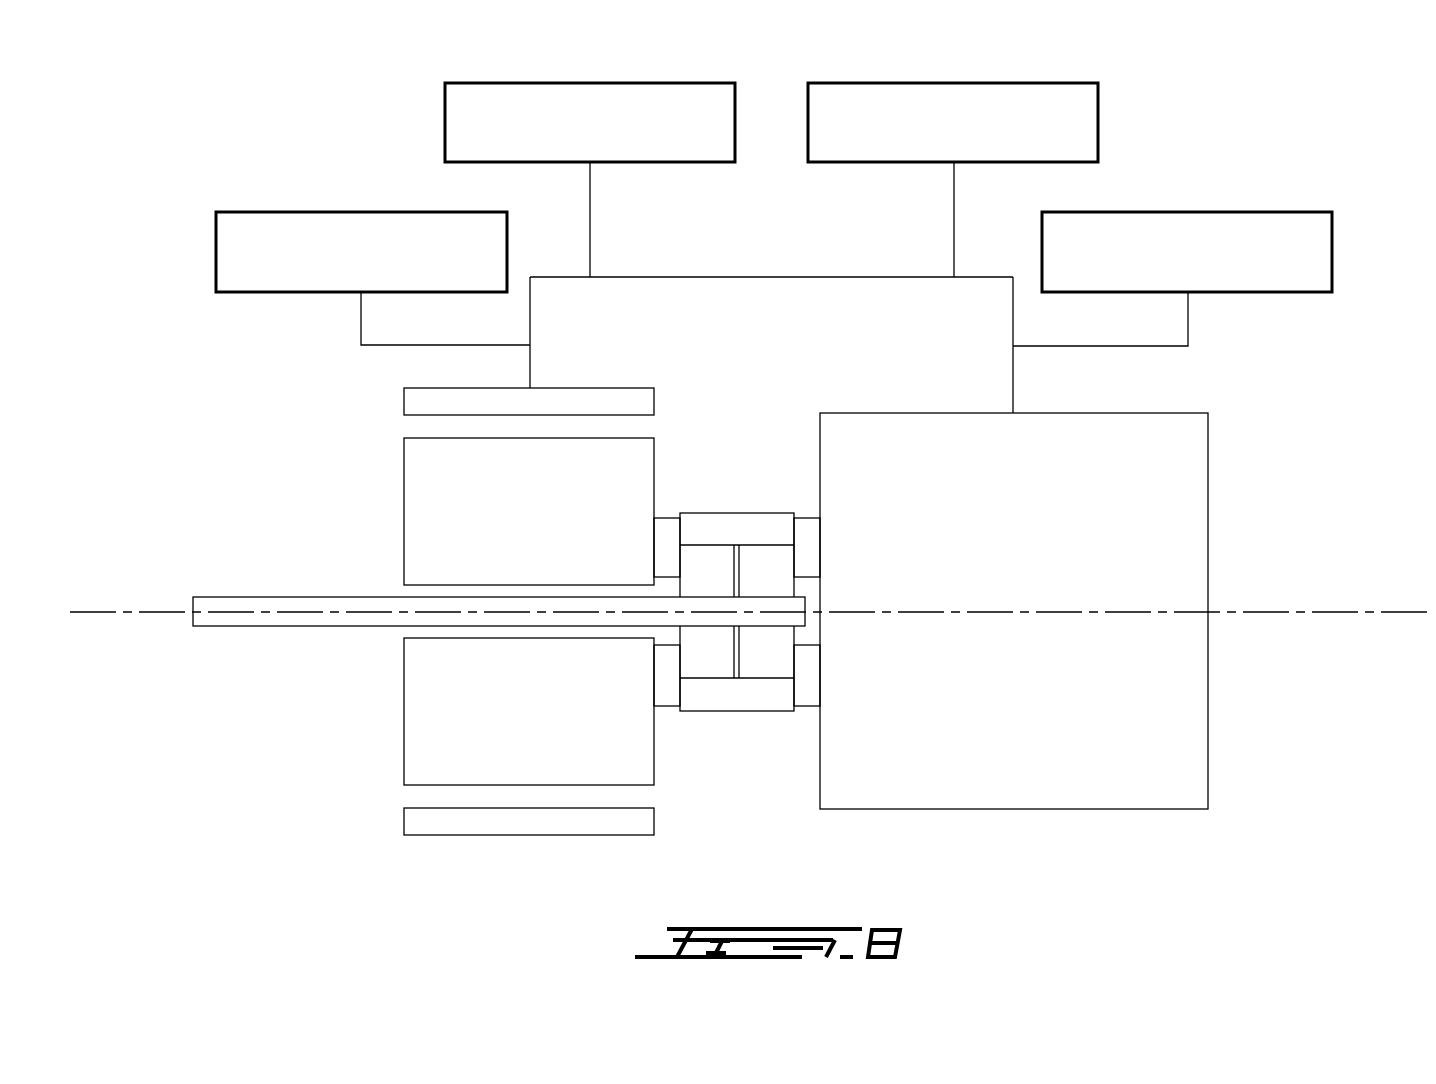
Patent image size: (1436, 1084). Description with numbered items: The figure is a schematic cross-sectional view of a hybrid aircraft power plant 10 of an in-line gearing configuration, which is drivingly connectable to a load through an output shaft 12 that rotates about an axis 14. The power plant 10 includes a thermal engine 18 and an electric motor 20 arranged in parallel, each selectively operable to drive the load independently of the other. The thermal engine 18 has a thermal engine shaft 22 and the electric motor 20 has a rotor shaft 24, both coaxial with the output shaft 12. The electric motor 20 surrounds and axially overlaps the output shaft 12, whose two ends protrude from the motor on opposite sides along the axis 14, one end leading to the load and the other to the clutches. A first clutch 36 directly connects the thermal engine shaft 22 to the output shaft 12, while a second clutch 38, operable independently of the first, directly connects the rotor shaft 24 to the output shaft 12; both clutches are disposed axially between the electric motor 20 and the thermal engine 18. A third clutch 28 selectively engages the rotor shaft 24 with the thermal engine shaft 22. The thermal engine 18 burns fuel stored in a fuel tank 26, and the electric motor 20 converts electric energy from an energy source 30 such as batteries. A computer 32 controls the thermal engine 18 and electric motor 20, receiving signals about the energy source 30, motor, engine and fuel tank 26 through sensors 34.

The power plant 10 is at (258, 149).
The output shaft 12 is at (280, 597).
The axis 14 is at (1372, 610).
The thermal engine 18 is at (907, 413).
The electric motor 20 is at (404, 458).
The thermal engine shaft 22 is at (806, 706).
The rotor shaft 24 is at (671, 518).
The fuel tank 26 is at (1298, 212).
The third clutch 28 is at (774, 513).
The energy source 30 is at (216, 250).
The computer 32 is at (445, 123).
The sensor 34 is at (1100, 124).
The first clutch 36 is at (757, 663).
The second clutch 38 is at (712, 568).